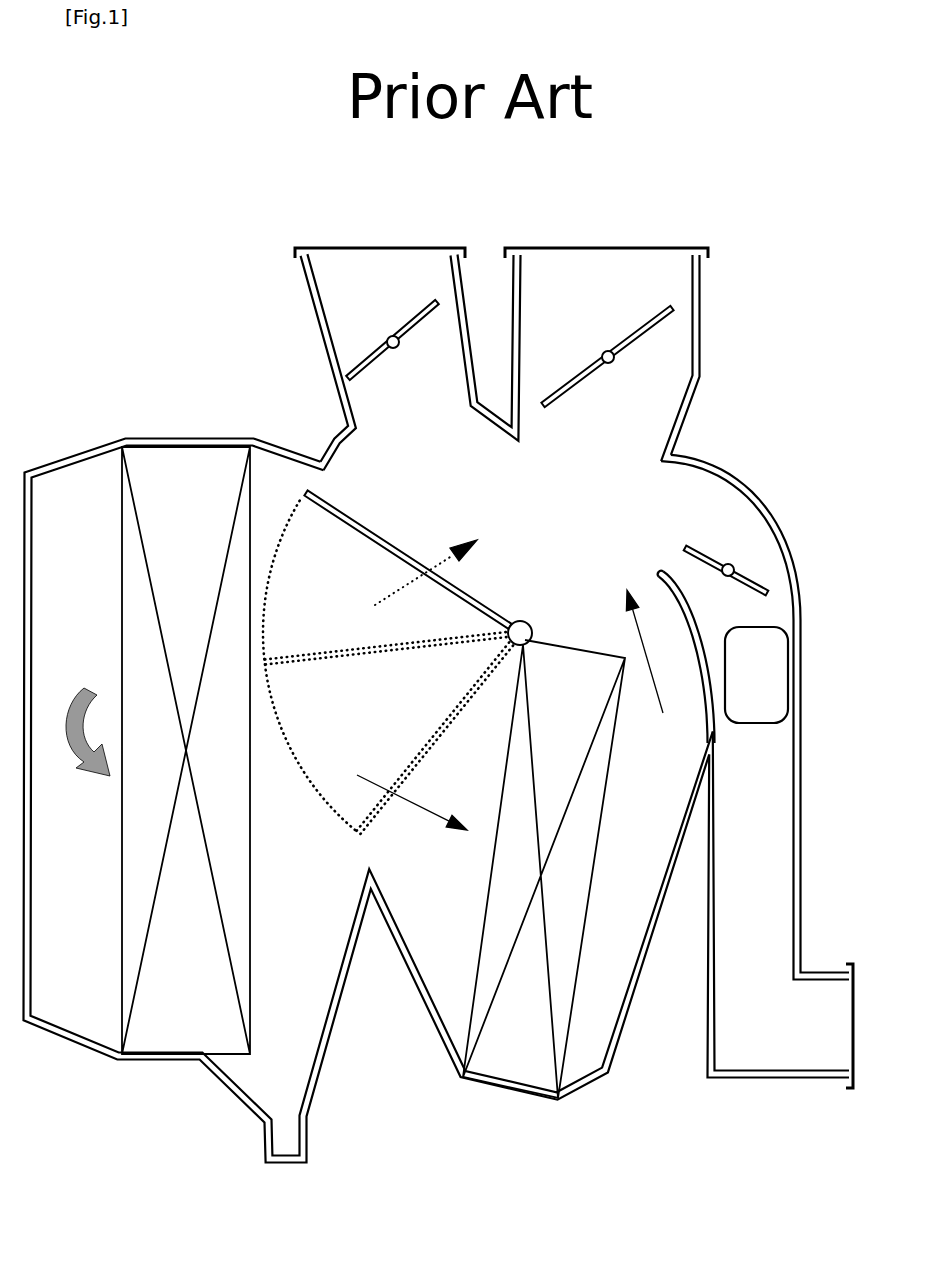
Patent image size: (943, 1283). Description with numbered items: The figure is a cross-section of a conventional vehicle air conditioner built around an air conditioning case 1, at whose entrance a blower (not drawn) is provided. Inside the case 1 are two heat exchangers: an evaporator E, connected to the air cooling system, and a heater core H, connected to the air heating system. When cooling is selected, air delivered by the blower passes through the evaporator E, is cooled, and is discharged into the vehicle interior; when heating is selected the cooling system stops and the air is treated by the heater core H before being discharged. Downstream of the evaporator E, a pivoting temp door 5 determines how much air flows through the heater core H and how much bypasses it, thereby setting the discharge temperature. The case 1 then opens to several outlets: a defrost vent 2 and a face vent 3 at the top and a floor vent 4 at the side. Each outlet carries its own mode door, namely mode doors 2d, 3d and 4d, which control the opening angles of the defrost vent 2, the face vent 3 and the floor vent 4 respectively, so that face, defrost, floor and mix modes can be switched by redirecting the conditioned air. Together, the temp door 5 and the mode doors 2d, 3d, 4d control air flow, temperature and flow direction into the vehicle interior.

The air conditioning case 1 is at (98, 443).
The defrost vent 2 is at (376, 278).
The face vent 3 is at (600, 278).
The mode door 2d is at (362, 362).
The mode door 3d is at (652, 330).
The floor vent 4 is at (760, 818).
The mode door 4d is at (757, 573).
The temp door 5 is at (363, 522).
The evaporator E is at (160, 1027).
The heater core H is at (515, 1067).